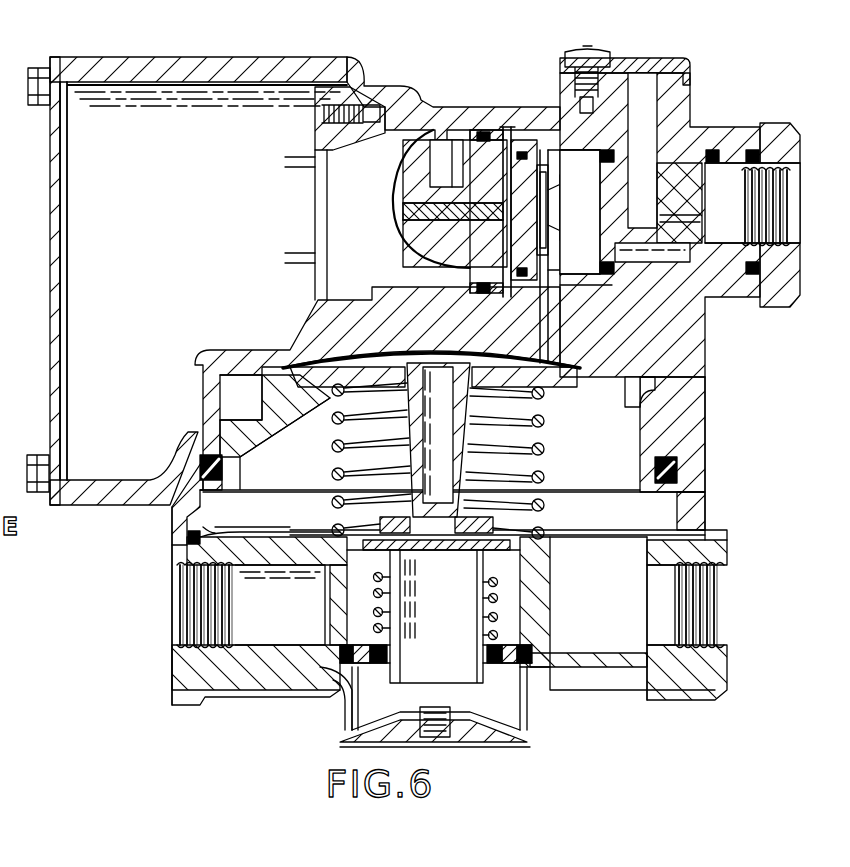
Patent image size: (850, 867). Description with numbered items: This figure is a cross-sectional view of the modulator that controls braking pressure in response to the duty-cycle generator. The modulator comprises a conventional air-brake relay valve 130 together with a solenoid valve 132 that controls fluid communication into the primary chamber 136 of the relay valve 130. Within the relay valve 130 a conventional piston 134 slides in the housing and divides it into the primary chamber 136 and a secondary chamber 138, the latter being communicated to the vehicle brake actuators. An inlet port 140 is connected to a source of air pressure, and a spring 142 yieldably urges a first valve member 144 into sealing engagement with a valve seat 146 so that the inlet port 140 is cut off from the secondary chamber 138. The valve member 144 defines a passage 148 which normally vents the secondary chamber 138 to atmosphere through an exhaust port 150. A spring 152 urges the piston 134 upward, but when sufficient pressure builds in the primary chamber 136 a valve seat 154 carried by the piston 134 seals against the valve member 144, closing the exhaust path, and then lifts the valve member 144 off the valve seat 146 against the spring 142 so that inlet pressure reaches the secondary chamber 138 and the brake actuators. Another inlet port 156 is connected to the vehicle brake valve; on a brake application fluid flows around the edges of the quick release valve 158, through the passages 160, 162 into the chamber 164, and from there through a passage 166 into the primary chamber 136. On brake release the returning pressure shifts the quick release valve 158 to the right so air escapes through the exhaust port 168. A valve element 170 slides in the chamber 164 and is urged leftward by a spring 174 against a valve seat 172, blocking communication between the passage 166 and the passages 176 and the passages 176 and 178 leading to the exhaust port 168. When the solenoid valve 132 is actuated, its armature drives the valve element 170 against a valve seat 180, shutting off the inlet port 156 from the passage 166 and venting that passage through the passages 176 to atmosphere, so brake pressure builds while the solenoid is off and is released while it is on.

The air-brake relay valve 130 is at (683, 427).
The solenoid valve 132 is at (443, 150).
The piston 134 is at (652, 450).
The primary chamber 136 is at (578, 395).
The secondary chamber 138 is at (623, 477).
The inlet port 140 is at (180, 620).
The spring 142 is at (347, 707).
The first valve member 144 is at (387, 618).
The valve seat 146 is at (400, 548).
The passage 148 is at (467, 647).
The exhaust port 150 is at (515, 748).
The spring 152 is at (548, 450).
The valve seat 154 is at (490, 520).
The inlet port 156 is at (783, 223).
The quick release valve 158 is at (770, 172).
The passage 160 is at (653, 260).
The passage 162 is at (590, 253).
The chamber 164 is at (618, 105).
The passage 166 is at (560, 333).
The exhaust port 168 is at (648, 103).
The valve element 170 is at (510, 127).
The valve seat 172 is at (460, 243).
The spring 174 is at (532, 296).
The passages 176 is at (480, 112).
The passages 178 is at (553, 140).
The valve seat 180 is at (605, 175).